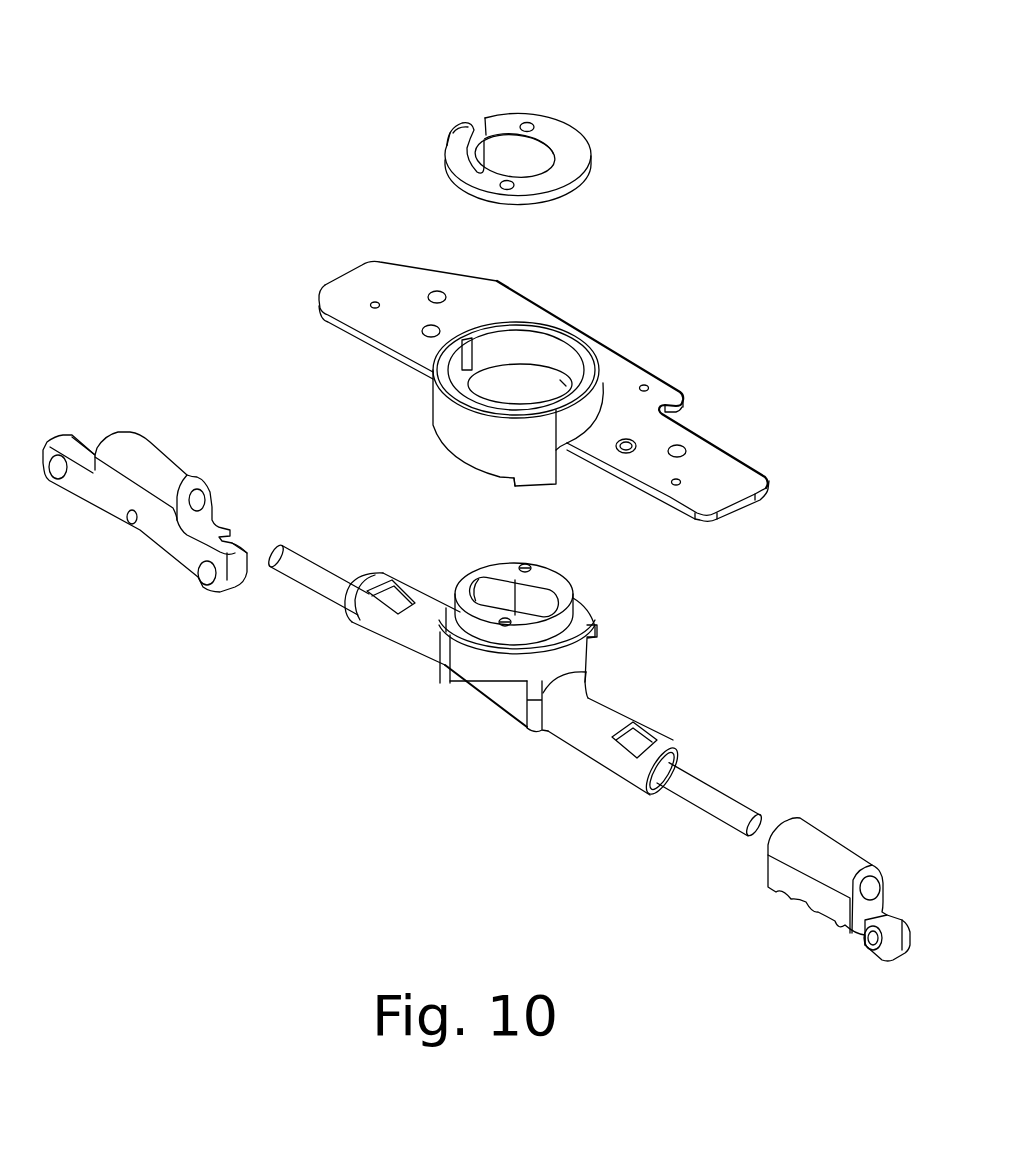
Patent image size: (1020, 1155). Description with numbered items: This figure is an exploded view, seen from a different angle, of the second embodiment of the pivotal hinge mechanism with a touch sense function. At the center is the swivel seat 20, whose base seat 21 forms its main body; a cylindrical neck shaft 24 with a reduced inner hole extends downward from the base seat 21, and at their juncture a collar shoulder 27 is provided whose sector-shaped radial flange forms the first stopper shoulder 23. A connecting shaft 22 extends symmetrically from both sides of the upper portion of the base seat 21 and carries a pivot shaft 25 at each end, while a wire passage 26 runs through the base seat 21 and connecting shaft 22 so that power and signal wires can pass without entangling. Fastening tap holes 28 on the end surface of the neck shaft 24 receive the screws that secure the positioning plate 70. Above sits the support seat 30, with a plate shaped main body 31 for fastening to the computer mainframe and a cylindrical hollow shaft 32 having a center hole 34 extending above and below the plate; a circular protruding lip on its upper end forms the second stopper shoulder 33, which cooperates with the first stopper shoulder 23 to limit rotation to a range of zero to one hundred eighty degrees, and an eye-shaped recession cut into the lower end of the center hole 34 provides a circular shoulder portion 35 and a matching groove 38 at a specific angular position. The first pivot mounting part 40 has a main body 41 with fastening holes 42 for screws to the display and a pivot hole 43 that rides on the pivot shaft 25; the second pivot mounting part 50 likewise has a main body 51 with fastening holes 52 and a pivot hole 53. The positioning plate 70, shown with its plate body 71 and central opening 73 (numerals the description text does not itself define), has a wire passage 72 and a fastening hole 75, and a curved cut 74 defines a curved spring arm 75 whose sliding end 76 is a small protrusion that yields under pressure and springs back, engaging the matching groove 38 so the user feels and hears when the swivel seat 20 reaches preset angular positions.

The swivel seat 20 is at (515, 672).
The base seat 21 is at (587, 668).
The connecting shaft 22 is at (430, 605).
The first stopper shoulder 23 is at (600, 621).
The cylindrical neck shaft 24 is at (465, 628).
The pivot shaft 25 is at (313, 555).
The wire passage 26 is at (492, 585).
The collar shoulder 27 is at (453, 612).
The fastening tap holes 28 is at (525, 563).
The support seat 30 is at (544, 373).
The plate shaped main body 31 is at (361, 275).
The cylindrical hollow shaft 32 is at (445, 440).
The second stopper shoulder 33 is at (560, 478).
The center hole 34 is at (497, 400).
The circular shoulder portion 35 is at (530, 357).
The matching groove 38 is at (462, 334).
The first pivot mounting part 40 is at (848, 887).
The main body 41 is at (830, 848).
The fastening holes 42 is at (868, 945).
The pivot hole 43 is at (873, 892).
The second pivot mounting part 50 is at (134, 496).
The main body 51 is at (154, 450).
The fastening holes 52 is at (56, 472).
The pivot hole 53 is at (200, 502).
The positioning plate 70 is at (503, 133).
The ring body 71 is at (562, 138).
The wire passage 72 is at (527, 122).
The ring opening 73 is at (507, 150).
The curved cut 74 is at (483, 128).
The curved spring arm 75 is at (450, 147).
The sliding end 76 is at (463, 122).